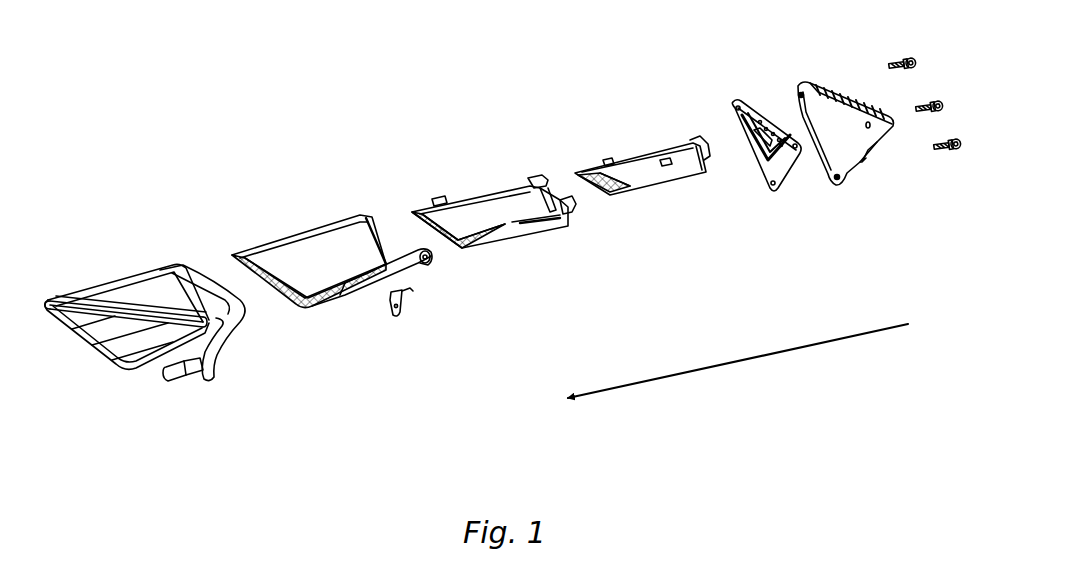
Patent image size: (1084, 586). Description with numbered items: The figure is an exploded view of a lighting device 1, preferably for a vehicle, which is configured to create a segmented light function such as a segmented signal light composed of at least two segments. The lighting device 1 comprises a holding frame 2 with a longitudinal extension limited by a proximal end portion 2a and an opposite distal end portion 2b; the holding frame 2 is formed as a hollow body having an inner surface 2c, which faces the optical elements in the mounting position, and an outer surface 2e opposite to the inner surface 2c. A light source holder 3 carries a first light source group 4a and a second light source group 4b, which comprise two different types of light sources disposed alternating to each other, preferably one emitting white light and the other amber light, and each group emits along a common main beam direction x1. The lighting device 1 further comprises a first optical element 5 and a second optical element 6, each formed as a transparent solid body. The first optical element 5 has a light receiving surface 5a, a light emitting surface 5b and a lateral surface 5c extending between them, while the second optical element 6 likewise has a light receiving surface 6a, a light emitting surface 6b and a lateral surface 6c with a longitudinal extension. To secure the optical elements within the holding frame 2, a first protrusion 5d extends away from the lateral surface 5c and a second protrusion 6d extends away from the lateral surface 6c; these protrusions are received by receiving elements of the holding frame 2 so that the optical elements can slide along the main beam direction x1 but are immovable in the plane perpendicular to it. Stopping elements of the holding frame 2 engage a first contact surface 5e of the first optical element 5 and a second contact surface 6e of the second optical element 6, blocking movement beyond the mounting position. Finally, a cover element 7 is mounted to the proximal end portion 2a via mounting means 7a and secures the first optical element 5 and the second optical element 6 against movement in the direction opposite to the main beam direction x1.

The lighting device 1 is at (97, 87).
The holding frame 2 is at (161, 322).
The proximal end portion 2a is at (243, 338).
The distal end portion 2b is at (70, 337).
The inner surface 2c is at (137, 350).
The outer surface 2e is at (131, 298).
The light source holder 3 is at (756, 155).
The first light source group 4a is at (760, 116).
The second light source group 4b is at (740, 106).
The first optical element 5 is at (471, 232).
The light receiving surface 5a is at (582, 218).
The light emitting surface 5b is at (415, 229).
The lateral surface 5c is at (490, 210).
The first protrusion 5d is at (440, 198).
The first contact surface 5e is at (424, 205).
The second optical element 6 is at (355, 269).
The light receiving surface 6a is at (396, 245).
The light emitting surface 6b is at (300, 314).
The lateral surface 6c is at (305, 266).
The second protrusion 6d is at (436, 264).
The second contact surface 6e is at (385, 312).
The cover element 7 is at (822, 180).
The mounting means 7a is at (901, 74).
The main beam direction x1 is at (887, 329).